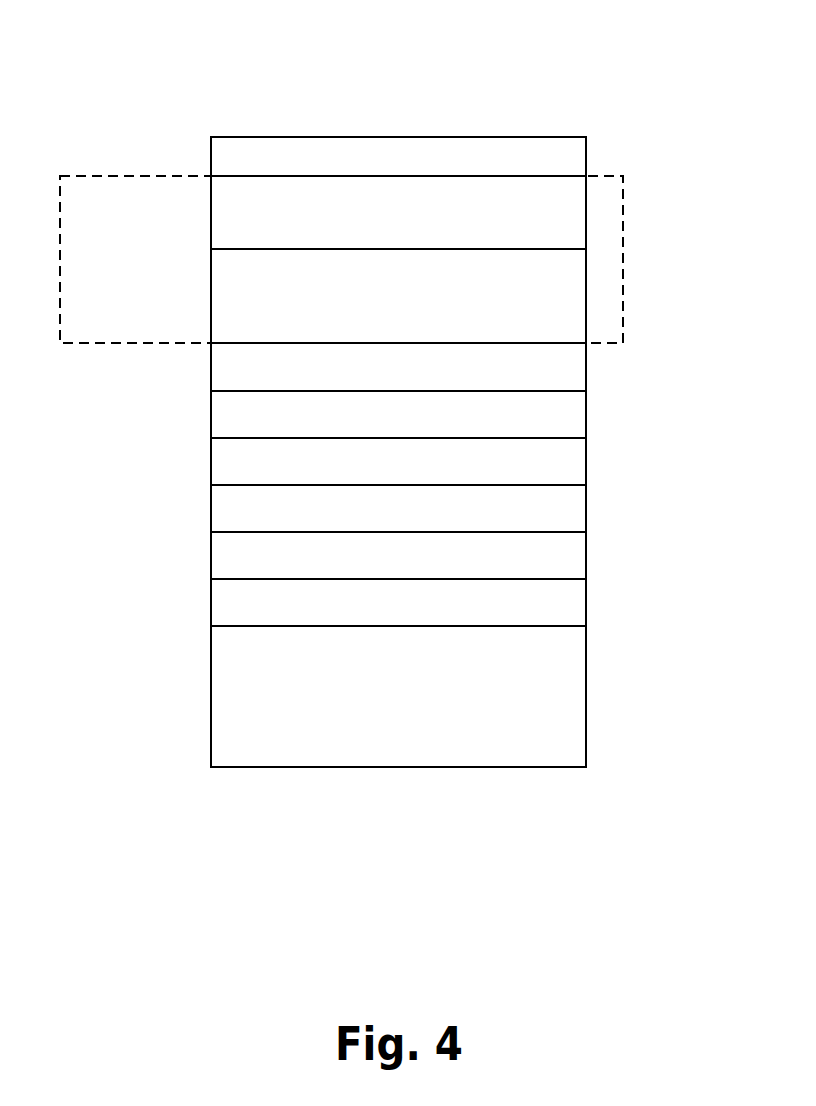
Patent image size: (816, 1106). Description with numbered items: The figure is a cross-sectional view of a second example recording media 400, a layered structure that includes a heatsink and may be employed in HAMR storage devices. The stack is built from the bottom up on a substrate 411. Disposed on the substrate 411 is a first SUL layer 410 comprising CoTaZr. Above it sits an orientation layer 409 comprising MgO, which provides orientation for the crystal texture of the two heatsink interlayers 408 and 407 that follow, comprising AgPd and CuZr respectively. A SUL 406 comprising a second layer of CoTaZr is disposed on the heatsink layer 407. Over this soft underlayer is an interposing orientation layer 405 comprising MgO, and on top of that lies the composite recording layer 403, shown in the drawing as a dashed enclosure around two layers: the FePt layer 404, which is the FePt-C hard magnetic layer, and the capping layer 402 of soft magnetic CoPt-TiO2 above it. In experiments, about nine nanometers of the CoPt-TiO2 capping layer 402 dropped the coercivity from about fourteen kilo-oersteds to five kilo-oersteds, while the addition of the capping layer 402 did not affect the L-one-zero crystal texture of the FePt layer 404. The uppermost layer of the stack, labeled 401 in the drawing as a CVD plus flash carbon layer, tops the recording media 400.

The recording media 400 is at (434, 85).
The CVD + flash carbon overcoat layer 401 is at (586, 142).
The capping layer 402 is at (211, 219).
The composite recording layer 403 is at (623, 251).
The FePt layer 404 is at (211, 294).
The orientation layer 405 is at (586, 370).
The SUL 406 is at (586, 421).
The heatsink interlayer 407 is at (586, 462).
The heatsink interlayer 408 is at (211, 513).
The orientation layer 409 is at (211, 559).
The first SUL layer 410 is at (211, 597).
The substrate 411 is at (211, 681).